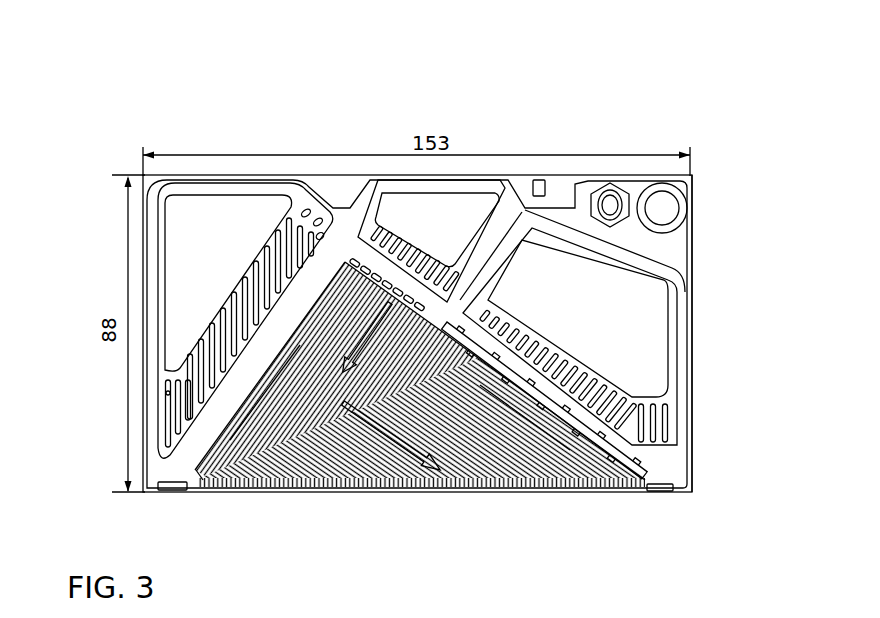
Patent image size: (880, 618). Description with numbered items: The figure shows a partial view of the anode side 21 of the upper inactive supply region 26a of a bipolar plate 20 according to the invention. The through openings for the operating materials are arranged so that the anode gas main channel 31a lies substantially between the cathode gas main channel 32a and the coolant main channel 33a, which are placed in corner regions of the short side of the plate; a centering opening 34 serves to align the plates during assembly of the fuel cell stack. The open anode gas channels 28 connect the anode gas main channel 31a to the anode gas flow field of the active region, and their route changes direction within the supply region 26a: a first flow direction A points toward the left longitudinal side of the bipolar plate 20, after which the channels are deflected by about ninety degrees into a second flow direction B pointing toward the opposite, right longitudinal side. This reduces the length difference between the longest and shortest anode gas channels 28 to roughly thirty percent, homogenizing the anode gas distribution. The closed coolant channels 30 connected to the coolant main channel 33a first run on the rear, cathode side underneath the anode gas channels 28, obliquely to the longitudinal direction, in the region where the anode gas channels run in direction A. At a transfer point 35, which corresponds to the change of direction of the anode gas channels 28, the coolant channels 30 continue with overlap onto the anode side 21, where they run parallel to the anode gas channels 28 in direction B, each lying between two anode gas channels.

The bipolar plate 20 is at (716, 80).
The anode side 21 is at (688, 259).
The inactive supply region 26a is at (497, 505).
The anode gas channels 28 is at (278, 405).
The coolant channels 30 is at (525, 415).
The anode gas main channel 31a is at (456, 234).
The cathode gas main channel 32a is at (597, 320).
The coolant main channel 33a is at (223, 254).
The centering opening 34 is at (662, 207).
The transfer point 35 is at (203, 473).
The first flow direction A is at (363, 332).
The second flow direction B is at (393, 437).